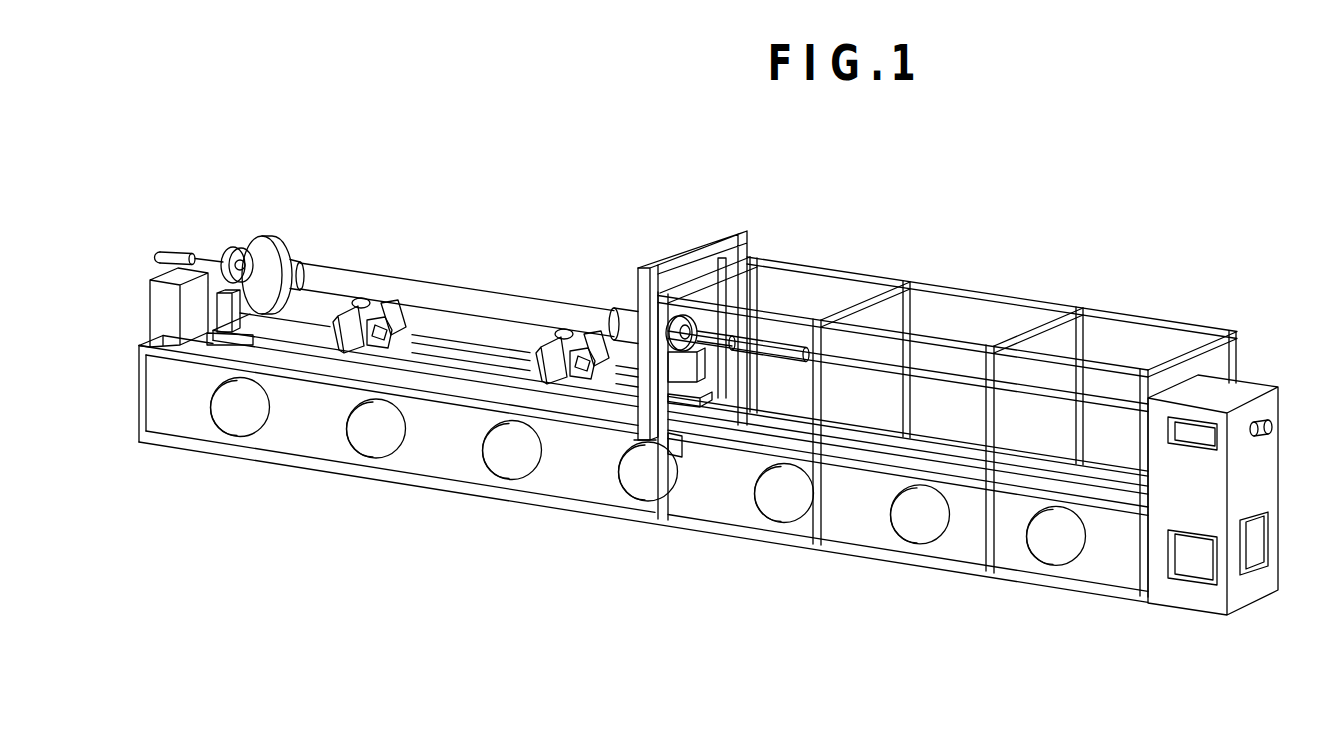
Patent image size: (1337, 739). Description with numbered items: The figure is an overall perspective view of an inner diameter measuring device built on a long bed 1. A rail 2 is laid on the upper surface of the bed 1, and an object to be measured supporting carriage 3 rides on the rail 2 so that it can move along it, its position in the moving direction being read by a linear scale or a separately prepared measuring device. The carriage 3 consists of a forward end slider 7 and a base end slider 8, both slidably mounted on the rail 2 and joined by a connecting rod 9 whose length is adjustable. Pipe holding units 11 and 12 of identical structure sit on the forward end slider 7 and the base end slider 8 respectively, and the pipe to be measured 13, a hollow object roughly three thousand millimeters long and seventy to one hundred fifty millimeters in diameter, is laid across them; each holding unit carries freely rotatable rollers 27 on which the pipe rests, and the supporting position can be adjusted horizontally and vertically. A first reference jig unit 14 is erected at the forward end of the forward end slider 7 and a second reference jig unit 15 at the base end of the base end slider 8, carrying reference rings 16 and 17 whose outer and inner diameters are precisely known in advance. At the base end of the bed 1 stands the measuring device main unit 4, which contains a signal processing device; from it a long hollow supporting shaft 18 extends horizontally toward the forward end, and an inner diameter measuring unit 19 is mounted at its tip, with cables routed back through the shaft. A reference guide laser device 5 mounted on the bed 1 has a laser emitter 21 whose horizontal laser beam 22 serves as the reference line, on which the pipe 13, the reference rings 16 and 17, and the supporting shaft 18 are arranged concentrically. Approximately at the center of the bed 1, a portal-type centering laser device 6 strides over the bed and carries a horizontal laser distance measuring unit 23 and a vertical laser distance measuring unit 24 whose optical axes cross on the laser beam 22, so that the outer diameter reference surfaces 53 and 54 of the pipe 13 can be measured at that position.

The bed 1 is at (738, 542).
The rail 2 is at (918, 435).
The object to be measured supporting carriage 3 is at (454, 331).
The measuring device main unit 4 is at (1240, 384).
The reference guide laser device 5 is at (148, 300).
The centering laser device 6 is at (733, 236).
The forward end slider 7 is at (293, 352).
The base end slider 8 is at (627, 417).
The connecting rod 9 is at (480, 338).
The pipe holding unit 11 is at (337, 345).
The pipe holding unit 12 is at (561, 408).
The pipe to be measured 13 is at (537, 340).
The first reference jig unit 14 is at (247, 236).
The second reference jig unit 15 is at (680, 312).
The reference ring 16 is at (203, 265).
The reference ring 17 is at (667, 300).
The supporting shaft 18 is at (937, 368).
The inner diameter measuring unit 19 is at (803, 263).
The laser emitter 21 is at (181, 251).
The laser beam 22 is at (219, 291).
The horizontal laser distance measuring unit 23 is at (630, 410).
The vertical laser distance measuring unit 24 is at (712, 315).
The roller 27 is at (376, 298).
The outer diameter reference surface 53 is at (307, 255).
The outer diameter reference surface 54 is at (613, 313).